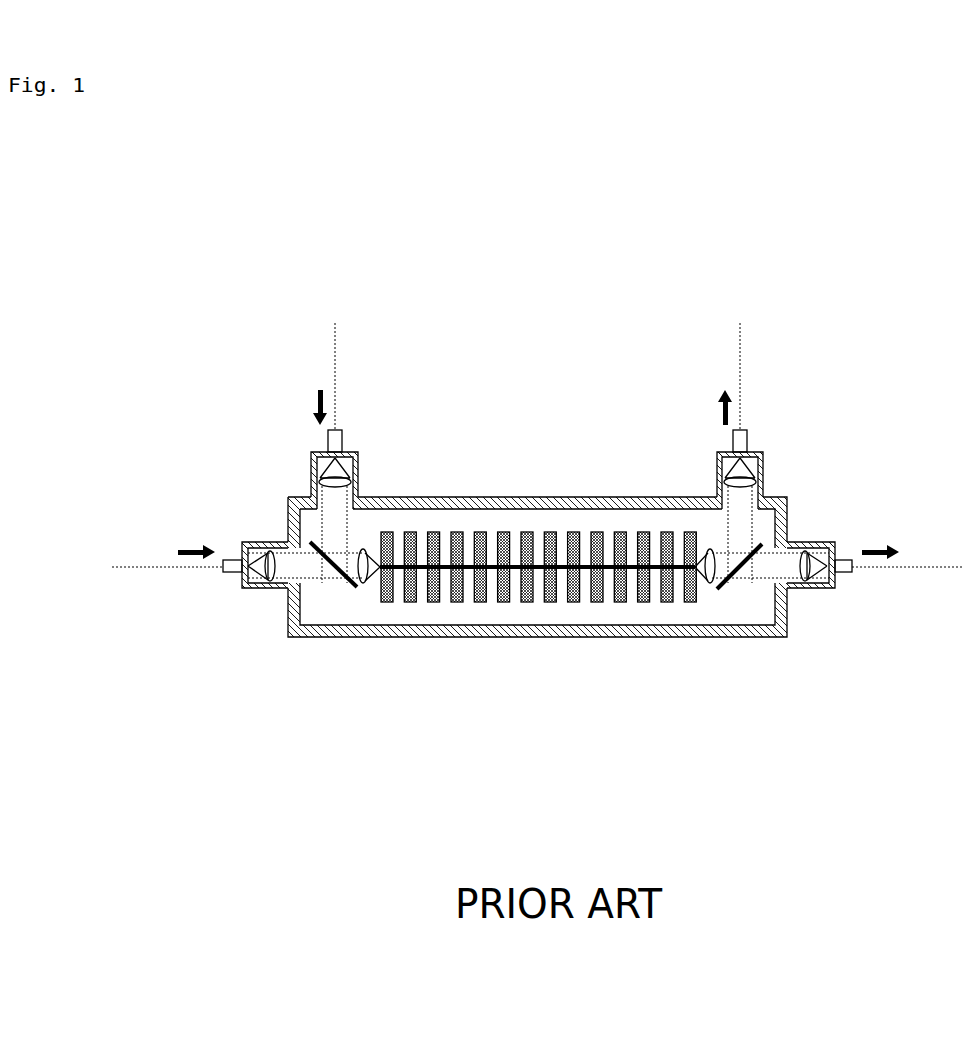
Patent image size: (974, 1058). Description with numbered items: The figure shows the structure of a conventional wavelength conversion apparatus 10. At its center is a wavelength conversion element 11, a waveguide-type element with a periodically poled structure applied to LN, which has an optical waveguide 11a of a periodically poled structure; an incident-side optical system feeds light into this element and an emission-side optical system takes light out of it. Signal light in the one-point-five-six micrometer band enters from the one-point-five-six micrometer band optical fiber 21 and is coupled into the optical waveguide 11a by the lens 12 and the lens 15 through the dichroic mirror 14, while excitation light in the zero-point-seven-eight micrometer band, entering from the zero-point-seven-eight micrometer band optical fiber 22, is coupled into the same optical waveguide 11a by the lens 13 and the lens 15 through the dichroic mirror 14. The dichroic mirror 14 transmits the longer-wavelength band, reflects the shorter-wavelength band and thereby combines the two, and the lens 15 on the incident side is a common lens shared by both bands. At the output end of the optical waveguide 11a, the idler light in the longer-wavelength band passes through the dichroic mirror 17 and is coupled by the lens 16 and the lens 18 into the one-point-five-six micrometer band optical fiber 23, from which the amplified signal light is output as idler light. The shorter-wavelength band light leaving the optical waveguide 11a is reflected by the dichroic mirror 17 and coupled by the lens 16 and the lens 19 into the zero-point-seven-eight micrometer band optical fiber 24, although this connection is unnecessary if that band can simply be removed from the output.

The wavelength conversion apparatus 10 is at (548, 336).
The wavelength conversion element 11 is at (560, 603).
The optical waveguide 11a is at (493, 603).
The lens 12 is at (263, 589).
The lens 13 is at (358, 476).
The dichroic mirror 14 is at (352, 590).
The lens 15 is at (366, 586).
The lens 16 is at (709, 585).
The dichroic mirror 17 is at (717, 590).
The lens 18 is at (793, 589).
The lens 19 is at (763, 476).
The 1.56-µm band optical fiber 21 is at (135, 565).
The 0.78-µm band optical fiber 22 is at (339, 347).
The 1.56-µm band optical fiber 23 is at (939, 565).
The 0.78-µm band optical fiber 24 is at (744, 347).